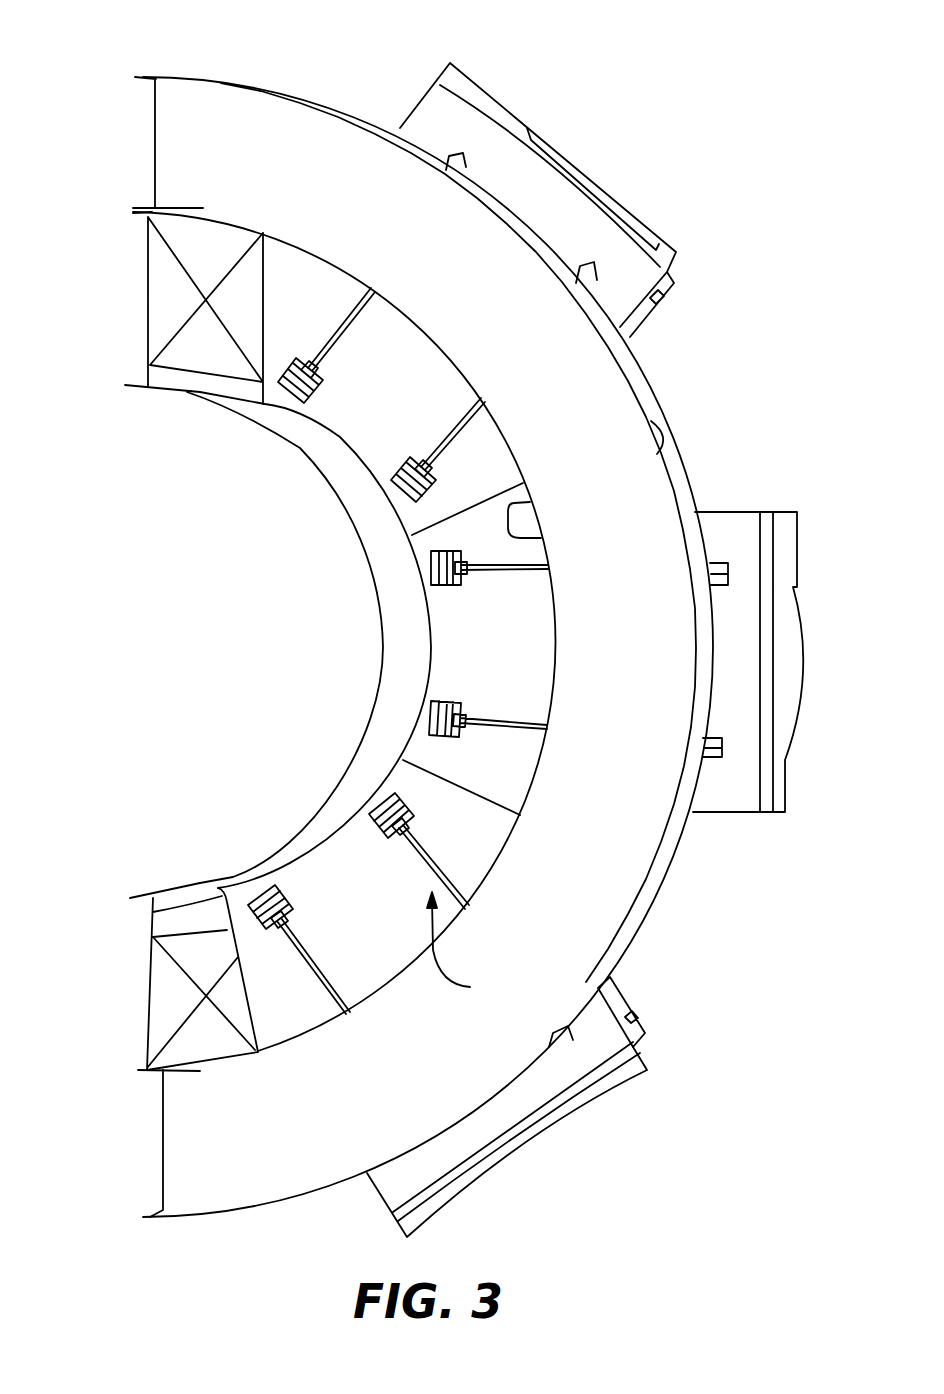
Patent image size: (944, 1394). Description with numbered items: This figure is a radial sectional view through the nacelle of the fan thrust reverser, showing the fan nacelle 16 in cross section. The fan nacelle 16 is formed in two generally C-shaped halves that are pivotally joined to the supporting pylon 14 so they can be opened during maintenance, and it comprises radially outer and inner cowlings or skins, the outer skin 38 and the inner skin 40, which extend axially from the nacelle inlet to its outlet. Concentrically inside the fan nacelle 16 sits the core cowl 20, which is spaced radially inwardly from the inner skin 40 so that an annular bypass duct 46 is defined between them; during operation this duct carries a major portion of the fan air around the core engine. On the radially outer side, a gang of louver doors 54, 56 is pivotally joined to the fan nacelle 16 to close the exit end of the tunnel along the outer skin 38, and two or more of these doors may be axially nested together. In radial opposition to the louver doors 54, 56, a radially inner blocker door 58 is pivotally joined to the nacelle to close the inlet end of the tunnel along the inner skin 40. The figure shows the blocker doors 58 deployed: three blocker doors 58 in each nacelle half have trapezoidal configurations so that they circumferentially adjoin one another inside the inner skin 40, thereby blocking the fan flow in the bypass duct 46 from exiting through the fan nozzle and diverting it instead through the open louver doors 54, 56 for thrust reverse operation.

The supporting pylon 14 is at (148, 303).
The fan nacelle 16 is at (228, 82).
The core cowl 20 is at (404, 600).
The outer skin 38 is at (657, 447).
The inner skin 40 is at (540, 537).
The annular bypass duct 46 is at (465, 946).
The louver door 54 is at (647, 1062).
The louver door 56 is at (630, 1000).
The blocker door 58 is at (418, 404).